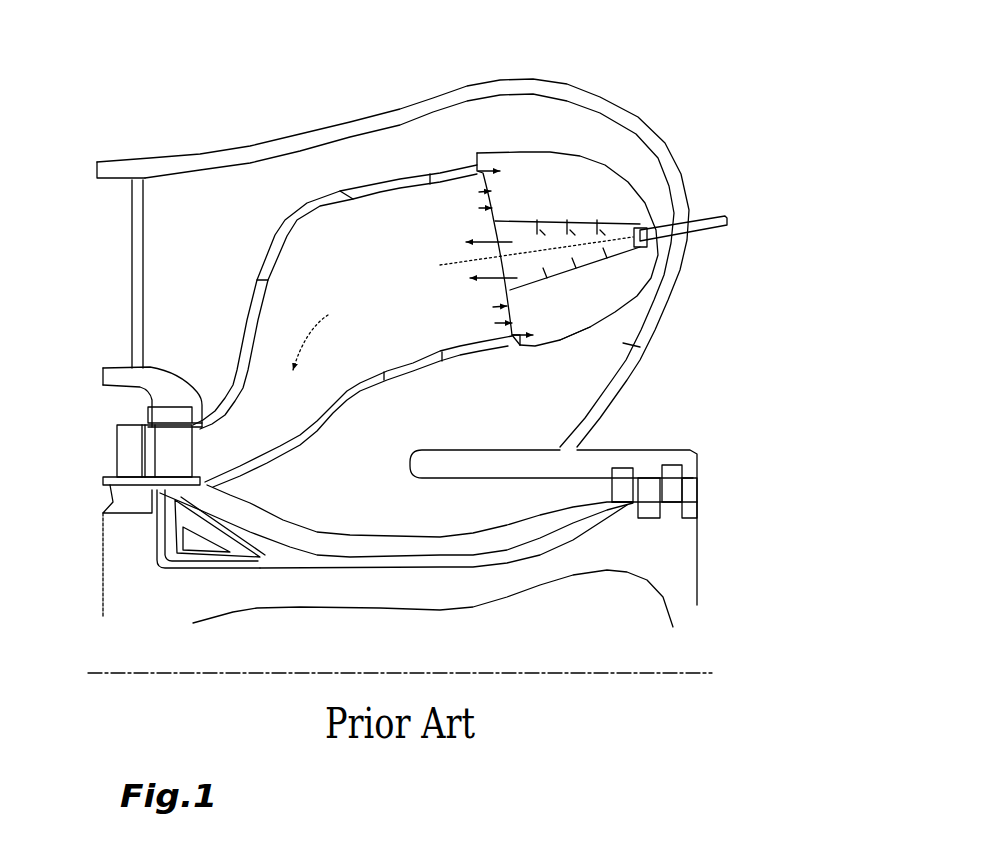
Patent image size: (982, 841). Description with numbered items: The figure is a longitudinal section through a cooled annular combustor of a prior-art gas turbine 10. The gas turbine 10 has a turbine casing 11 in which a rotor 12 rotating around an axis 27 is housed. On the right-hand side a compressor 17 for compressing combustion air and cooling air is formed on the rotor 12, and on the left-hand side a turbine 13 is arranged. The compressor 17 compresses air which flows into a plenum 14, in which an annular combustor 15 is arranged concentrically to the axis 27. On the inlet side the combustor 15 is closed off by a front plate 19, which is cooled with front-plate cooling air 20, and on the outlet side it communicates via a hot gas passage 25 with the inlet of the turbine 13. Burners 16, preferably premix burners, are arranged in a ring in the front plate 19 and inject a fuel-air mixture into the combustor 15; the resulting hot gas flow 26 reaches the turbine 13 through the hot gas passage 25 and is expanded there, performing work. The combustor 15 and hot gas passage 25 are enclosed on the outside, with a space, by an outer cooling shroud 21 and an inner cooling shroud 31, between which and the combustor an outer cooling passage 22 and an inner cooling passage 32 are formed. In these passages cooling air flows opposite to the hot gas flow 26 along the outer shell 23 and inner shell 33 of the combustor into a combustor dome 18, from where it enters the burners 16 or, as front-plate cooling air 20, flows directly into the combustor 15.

The gas turbine 10 is at (172, 112).
The turbine casing 11 is at (562, 90).
The rotor 12 is at (172, 616).
The turbine 13 is at (108, 452).
The plenum 14 is at (219, 290).
The annular combustor 15 is at (419, 290).
The burners 16 is at (597, 273).
The compressor 17 is at (723, 468).
The combustor dome 18 is at (519, 352).
The front plate 19 is at (493, 197).
The front-plate cooling air 20 is at (517, 323).
The outer cooling shroud 21 is at (275, 236).
The outer cooling passage 22 is at (430, 178).
The outer shell 23 is at (348, 202).
The hot gas passage 25 is at (240, 431).
The hot gas flow 26 is at (316, 339).
The axis 27 is at (633, 673).
The inner cooling shroud 31 is at (333, 412).
The inner cooling passage 32 is at (442, 358).
The inner shell 33 is at (384, 368).